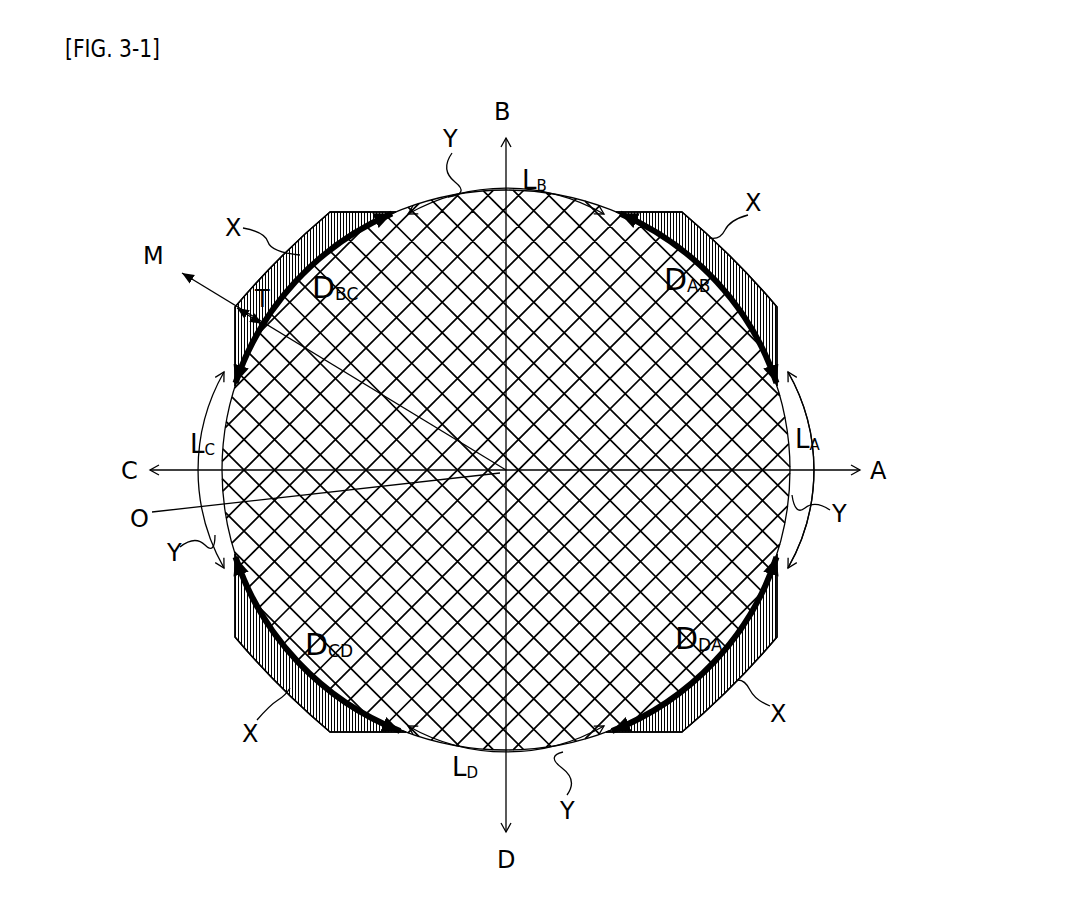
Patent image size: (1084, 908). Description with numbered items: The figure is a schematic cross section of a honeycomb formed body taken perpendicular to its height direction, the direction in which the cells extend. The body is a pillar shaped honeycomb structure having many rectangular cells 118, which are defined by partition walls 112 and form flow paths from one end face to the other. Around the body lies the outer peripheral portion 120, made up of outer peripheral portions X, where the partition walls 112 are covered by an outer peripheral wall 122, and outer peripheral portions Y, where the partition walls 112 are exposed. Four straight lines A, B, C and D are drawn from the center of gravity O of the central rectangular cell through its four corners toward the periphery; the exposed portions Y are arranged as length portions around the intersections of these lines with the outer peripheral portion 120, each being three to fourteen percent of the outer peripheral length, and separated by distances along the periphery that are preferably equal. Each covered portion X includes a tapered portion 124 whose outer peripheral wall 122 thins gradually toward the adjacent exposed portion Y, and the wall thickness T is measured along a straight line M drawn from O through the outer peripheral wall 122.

The partition walls 112 is at (290, 427).
The rectangular cells 118 is at (290, 410).
The outer peripheral portion 120 is at (798, 394).
The outer peripheral wall 122 is at (327, 215).
The tapered portion 124 is at (357, 210).